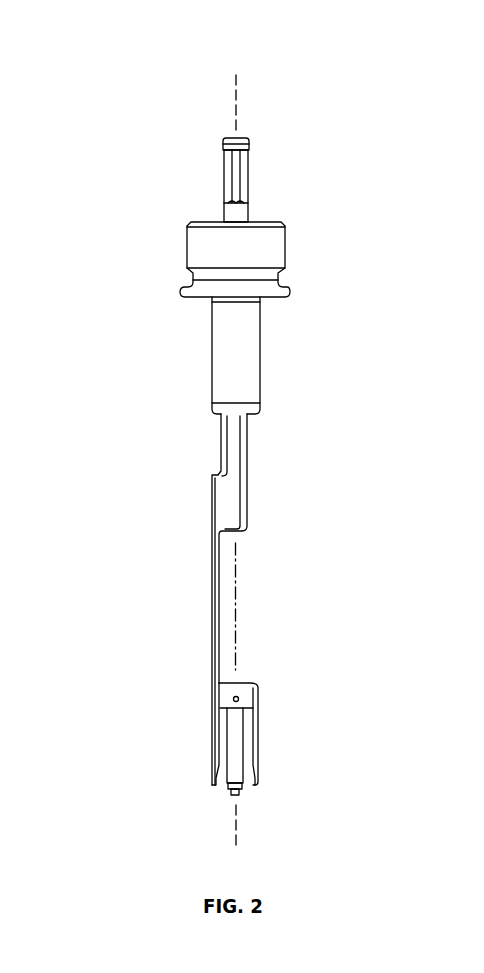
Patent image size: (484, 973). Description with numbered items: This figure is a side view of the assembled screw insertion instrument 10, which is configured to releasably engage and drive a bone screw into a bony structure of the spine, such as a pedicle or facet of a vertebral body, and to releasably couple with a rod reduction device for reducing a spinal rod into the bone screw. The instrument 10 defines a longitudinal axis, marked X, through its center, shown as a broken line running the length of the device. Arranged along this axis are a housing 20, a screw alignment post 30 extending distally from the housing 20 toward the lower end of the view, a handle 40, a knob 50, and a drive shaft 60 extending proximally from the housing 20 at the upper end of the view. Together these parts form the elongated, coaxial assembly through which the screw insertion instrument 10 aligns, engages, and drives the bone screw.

The screw insertion instrument 10 is at (172, 150).
The housing 20 is at (202, 596).
The screw alignment post 30 is at (250, 805).
The handle 40 is at (202, 365).
The knob 50 is at (295, 240).
The drive shaft 60 is at (258, 182).